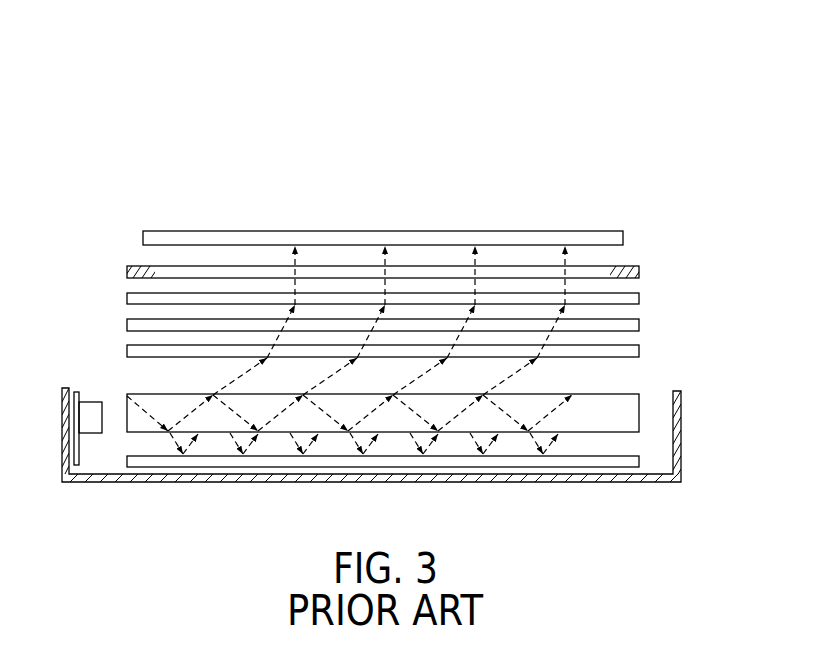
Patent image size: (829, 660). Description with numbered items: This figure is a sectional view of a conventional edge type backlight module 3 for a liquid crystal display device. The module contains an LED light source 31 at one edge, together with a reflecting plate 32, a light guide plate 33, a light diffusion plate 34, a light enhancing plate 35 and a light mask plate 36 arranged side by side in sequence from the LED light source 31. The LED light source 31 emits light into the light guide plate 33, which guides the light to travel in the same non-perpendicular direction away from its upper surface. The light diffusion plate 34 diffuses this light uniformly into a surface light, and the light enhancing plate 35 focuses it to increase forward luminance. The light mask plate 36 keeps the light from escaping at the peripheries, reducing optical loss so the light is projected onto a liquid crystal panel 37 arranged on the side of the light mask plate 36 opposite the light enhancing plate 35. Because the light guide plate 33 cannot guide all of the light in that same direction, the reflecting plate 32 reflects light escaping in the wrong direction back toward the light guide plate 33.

The edge type backlight module 3 is at (106, 214).
The LED light source 31 is at (95, 408).
The reflecting plate 32 is at (633, 462).
The light guide plate 33 is at (633, 417).
The light diffusion plate 34 is at (633, 354).
The light enhancing plate 35 is at (633, 301).
The light mask plate 36 is at (640, 274).
The liquid crystal panel 37 is at (625, 238).